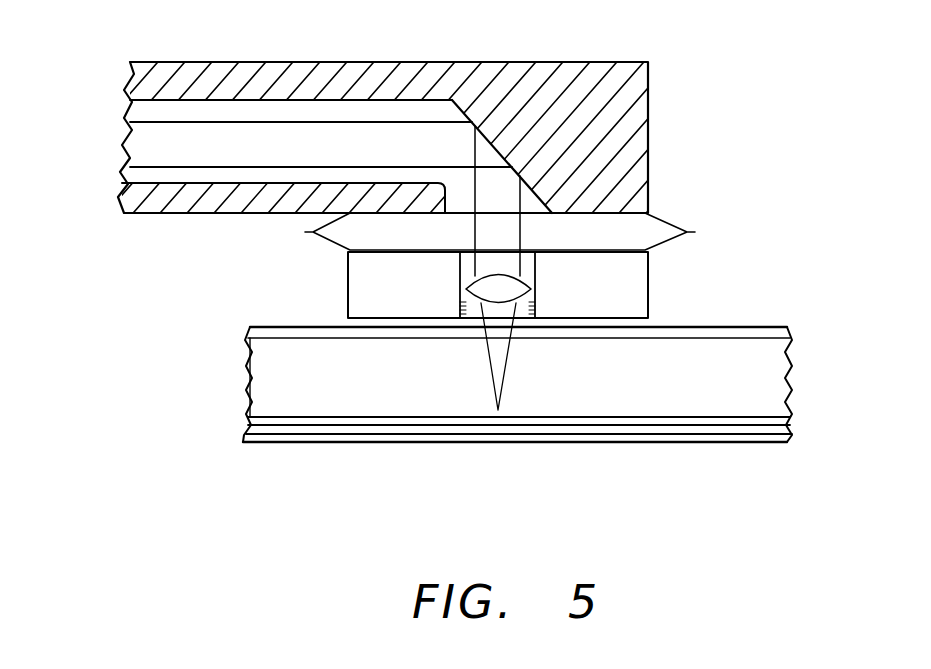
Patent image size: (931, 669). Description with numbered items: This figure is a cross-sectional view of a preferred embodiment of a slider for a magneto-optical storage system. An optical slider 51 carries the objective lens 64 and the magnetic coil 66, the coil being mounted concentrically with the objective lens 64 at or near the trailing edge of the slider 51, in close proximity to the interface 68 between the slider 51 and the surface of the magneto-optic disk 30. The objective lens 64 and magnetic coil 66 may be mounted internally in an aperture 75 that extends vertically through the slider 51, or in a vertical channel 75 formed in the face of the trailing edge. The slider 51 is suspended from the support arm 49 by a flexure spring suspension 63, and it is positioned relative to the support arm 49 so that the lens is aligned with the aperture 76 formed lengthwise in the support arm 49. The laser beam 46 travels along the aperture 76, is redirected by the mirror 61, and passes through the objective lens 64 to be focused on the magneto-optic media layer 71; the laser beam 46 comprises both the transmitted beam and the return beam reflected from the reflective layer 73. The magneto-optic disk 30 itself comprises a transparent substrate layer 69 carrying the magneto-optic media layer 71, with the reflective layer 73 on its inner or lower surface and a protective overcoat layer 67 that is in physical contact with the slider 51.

The support arm 49 is at (570, 62).
The aperture 76 is at (125, 112).
The laser beam 46 is at (127, 150).
The mirror 61 is at (514, 152).
The flexure spring suspension 63 is at (660, 220).
The aperture 75 is at (526, 262).
The objective lens 64 is at (648, 284).
The magnetic coil 66 is at (460, 302).
The optical slider 51 is at (648, 305).
The interface 68 is at (648, 317).
The protective overcoat layer 67 is at (247, 335).
The transparent substrate layer 69 is at (247, 380).
The magneto-optic media layer 71 is at (247, 425).
The reflective layer 73 is at (245, 437).
The magneto-optic disk 30 is at (340, 443).